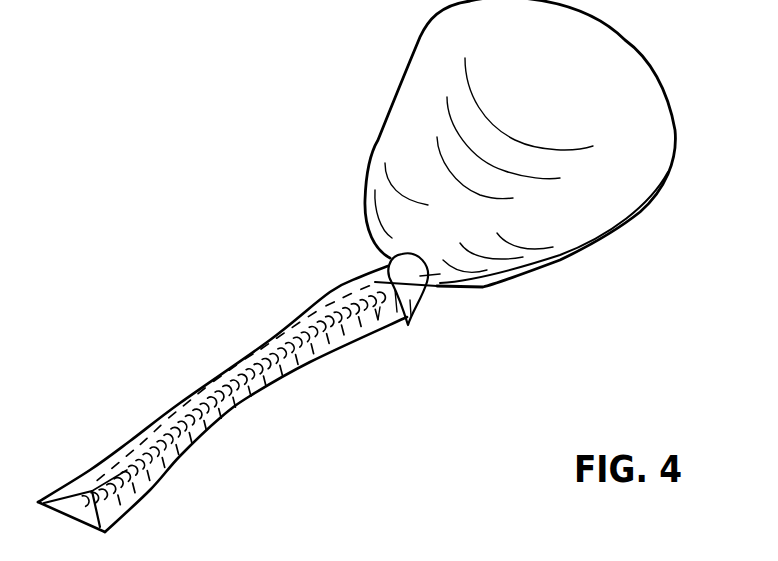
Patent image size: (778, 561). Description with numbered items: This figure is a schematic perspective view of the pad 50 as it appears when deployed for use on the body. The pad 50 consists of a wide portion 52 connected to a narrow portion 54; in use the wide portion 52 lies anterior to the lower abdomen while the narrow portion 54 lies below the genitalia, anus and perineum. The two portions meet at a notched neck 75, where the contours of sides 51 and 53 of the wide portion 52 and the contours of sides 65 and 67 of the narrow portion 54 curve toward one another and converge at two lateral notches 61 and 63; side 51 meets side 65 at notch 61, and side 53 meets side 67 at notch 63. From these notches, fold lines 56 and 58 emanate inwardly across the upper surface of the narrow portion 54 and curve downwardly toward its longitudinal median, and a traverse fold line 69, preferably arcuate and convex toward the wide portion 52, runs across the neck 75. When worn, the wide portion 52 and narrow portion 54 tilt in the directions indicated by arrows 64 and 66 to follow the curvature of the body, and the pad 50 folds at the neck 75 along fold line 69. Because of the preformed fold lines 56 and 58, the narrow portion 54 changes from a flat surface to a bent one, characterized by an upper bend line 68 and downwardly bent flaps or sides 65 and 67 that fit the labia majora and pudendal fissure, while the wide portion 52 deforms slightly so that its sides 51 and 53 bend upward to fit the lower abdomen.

The pad 50 is at (178, 101).
The side of wide portion 51 is at (483, 288).
The wide portion 52 is at (675, 112).
The side of wide portion 53 is at (366, 204).
The narrow portion 54 is at (349, 340).
The fold line 56 is at (445, 262).
The fold line 58 is at (405, 254).
The lateral notch 61 is at (432, 292).
The lateral notch 63 is at (370, 258).
The arrow 64 is at (302, 75).
The side of narrow portion 65 is at (405, 314).
The arrow 66 is at (96, 325).
The side of narrow portion 67 is at (362, 270).
The upper bend line 68 is at (317, 328).
The traverse fold line 69 is at (412, 262).
The neck 75 is at (418, 305).